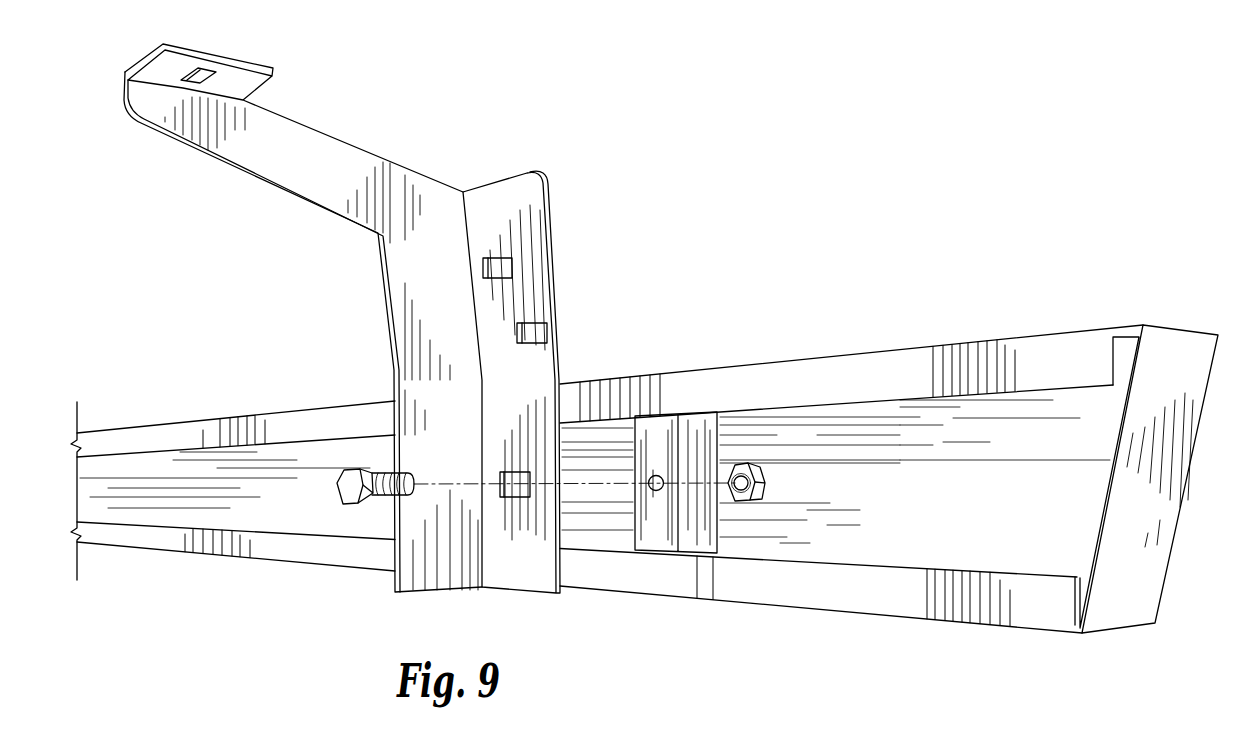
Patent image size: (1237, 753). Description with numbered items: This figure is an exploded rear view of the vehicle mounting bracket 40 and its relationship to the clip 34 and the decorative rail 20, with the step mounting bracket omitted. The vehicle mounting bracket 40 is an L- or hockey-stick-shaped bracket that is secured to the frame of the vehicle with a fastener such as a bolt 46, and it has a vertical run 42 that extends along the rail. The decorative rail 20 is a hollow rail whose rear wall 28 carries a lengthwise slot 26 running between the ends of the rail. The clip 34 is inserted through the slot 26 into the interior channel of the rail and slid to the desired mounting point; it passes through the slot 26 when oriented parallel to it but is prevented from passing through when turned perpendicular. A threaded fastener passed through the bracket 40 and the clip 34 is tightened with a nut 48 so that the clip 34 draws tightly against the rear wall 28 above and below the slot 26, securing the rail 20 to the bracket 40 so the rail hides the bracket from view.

The decorative rail 20 is at (813, 350).
The slot 26 is at (300, 495).
The rear wall 28 is at (214, 438).
The clip 34 is at (691, 457).
The vehicle mounting bracket 40 is at (362, 137).
The vertical run 42 is at (542, 287).
The bolt 46 is at (348, 488).
The nut 48 is at (766, 483).